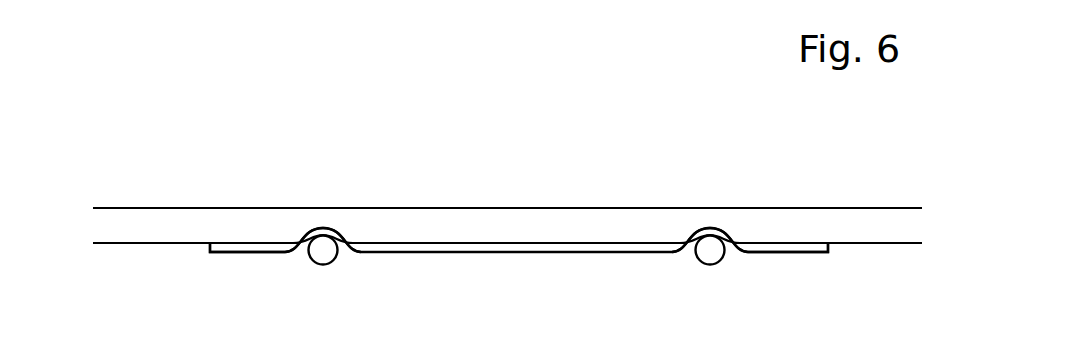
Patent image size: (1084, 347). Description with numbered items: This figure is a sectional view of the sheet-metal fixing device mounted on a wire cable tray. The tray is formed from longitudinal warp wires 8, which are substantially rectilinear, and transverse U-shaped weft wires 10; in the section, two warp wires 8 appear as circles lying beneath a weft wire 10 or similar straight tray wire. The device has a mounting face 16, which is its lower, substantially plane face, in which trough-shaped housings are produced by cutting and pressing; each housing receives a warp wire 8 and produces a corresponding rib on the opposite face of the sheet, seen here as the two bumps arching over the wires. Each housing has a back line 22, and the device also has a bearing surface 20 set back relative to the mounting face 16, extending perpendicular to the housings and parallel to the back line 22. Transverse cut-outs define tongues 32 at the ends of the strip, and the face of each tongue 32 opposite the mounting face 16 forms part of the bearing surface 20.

The weft wires 10 is at (138, 220).
The bearing surface 20 is at (258, 243).
The back line 22 is at (323, 228).
The warp wires 8 is at (325, 250).
The mounting face 16 is at (607, 254).
The tongue 32 is at (238, 247).